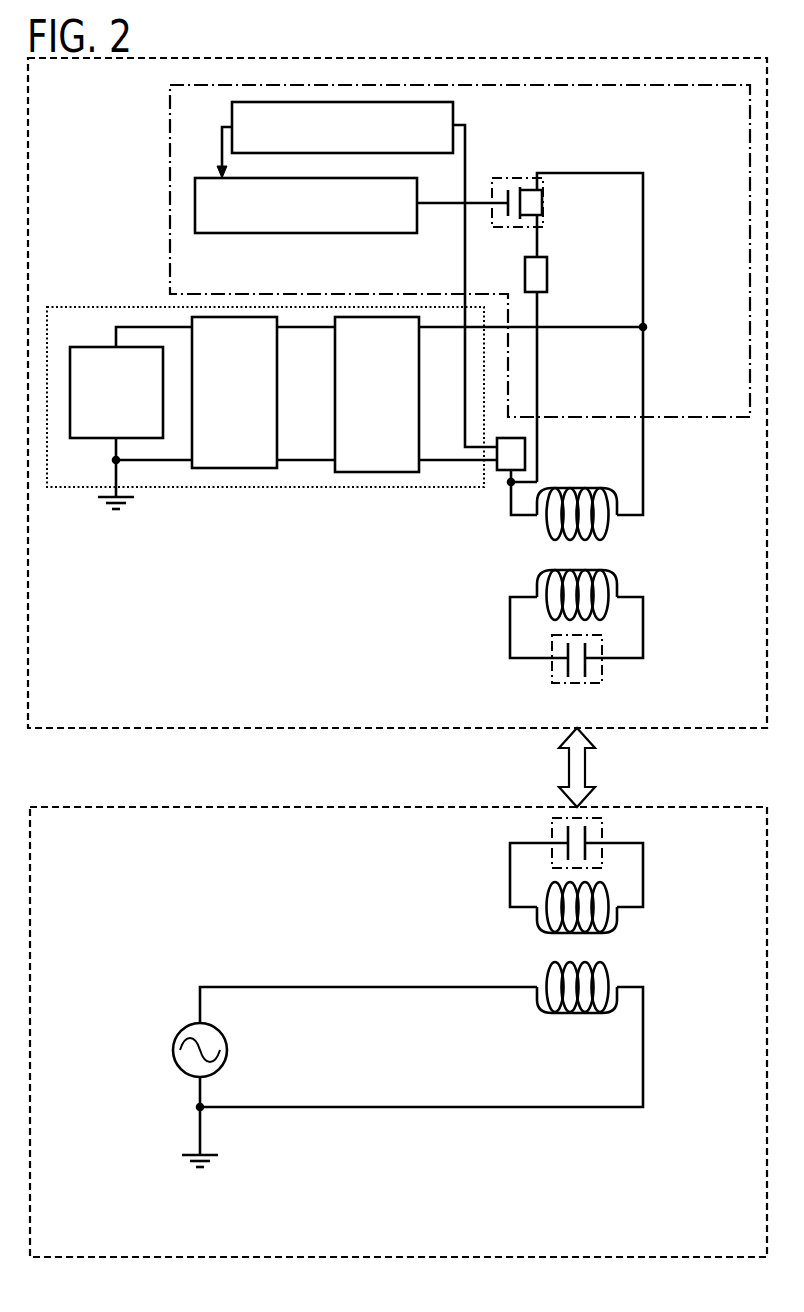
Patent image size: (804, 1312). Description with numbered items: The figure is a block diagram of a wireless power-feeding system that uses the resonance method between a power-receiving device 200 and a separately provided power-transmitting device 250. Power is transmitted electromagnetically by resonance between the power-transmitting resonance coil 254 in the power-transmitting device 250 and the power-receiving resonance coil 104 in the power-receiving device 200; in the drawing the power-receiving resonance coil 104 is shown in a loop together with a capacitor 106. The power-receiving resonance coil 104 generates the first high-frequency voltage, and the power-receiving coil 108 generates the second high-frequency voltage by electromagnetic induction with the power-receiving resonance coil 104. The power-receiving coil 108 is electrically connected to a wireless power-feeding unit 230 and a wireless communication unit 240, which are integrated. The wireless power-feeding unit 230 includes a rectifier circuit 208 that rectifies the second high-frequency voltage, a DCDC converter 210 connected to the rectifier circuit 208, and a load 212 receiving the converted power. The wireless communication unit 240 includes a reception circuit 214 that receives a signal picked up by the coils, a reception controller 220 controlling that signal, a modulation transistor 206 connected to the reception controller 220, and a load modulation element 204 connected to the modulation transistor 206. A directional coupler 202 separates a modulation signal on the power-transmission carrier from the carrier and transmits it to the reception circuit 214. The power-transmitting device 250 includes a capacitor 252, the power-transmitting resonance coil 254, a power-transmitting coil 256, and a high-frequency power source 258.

The power-receiving device 200 is at (86, 95).
The power-transmitting device 250 is at (111, 1239).
The wireless communication unit 240 is at (425, 251).
The wireless power-feeding unit 230 is at (263, 364).
The reception circuit 214 is at (342, 127).
The reception controller 220 is at (306, 205).
The load 212 is at (116, 392).
The DCDC converter 210 is at (234, 392).
The rectifier circuit 208 is at (377, 394).
The modulation transistor 206 is at (601, 181).
The load modulation element 204 is at (618, 284).
The directional coupler 202 is at (604, 426).
The power-receiving coil 108 is at (624, 514).
The power-receiving resonance coil 104 is at (624, 587).
The resonance capacitor 106 is at (631, 646).
The capacitor 252 is at (631, 843).
The power-transmitting resonance coil 254 is at (624, 925).
The power-transmitting coil 256 is at (624, 1005).
The high-frequency power source 258 is at (183, 1026).